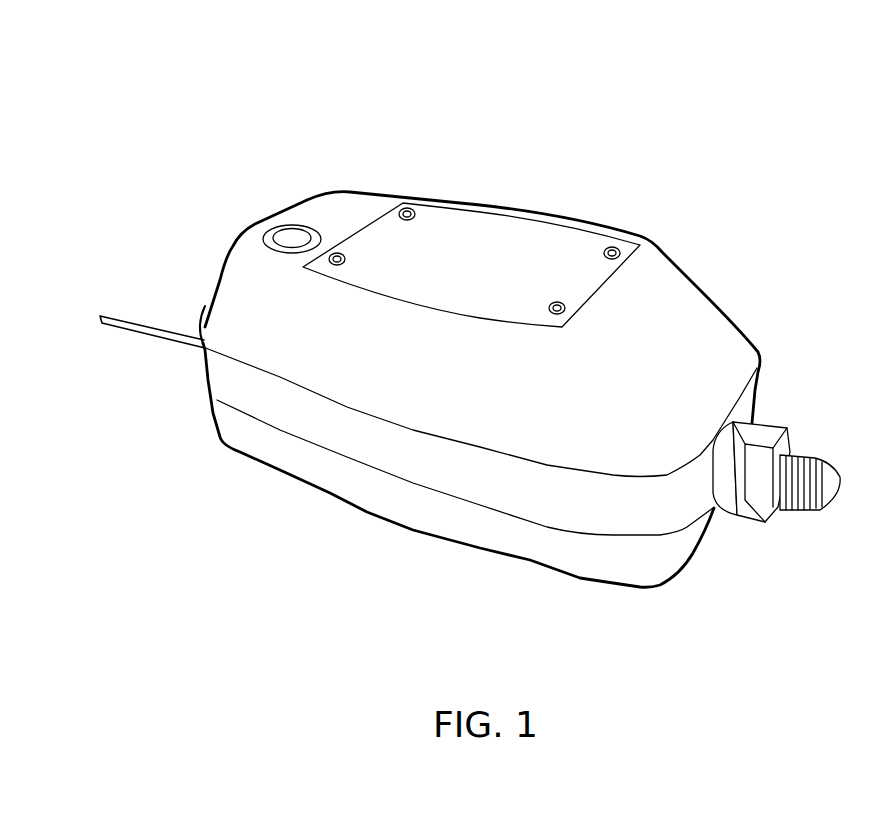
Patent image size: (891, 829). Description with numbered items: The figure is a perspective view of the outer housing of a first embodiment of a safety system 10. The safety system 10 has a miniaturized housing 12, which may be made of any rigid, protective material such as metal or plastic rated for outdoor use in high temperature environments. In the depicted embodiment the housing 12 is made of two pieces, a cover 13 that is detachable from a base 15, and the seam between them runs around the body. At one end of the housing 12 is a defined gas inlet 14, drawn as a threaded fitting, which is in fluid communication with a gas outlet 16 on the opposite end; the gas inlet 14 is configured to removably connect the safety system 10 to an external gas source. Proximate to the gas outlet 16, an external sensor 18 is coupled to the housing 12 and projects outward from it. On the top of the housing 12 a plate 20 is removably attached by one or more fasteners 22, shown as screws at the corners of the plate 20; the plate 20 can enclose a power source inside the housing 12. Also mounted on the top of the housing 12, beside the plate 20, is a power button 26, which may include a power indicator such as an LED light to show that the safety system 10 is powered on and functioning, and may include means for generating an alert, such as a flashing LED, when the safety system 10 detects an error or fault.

The safety system 10 is at (503, 57).
The housing 12 is at (545, 508).
The cover 13 is at (710, 335).
The gas inlet 14 is at (778, 507).
The base 15 is at (380, 510).
The gas outlet 16 is at (203, 310).
The external sensor 18 is at (130, 332).
The plate 20 is at (510, 235).
The fasteners 22 is at (612, 253).
The power button 26 is at (290, 238).